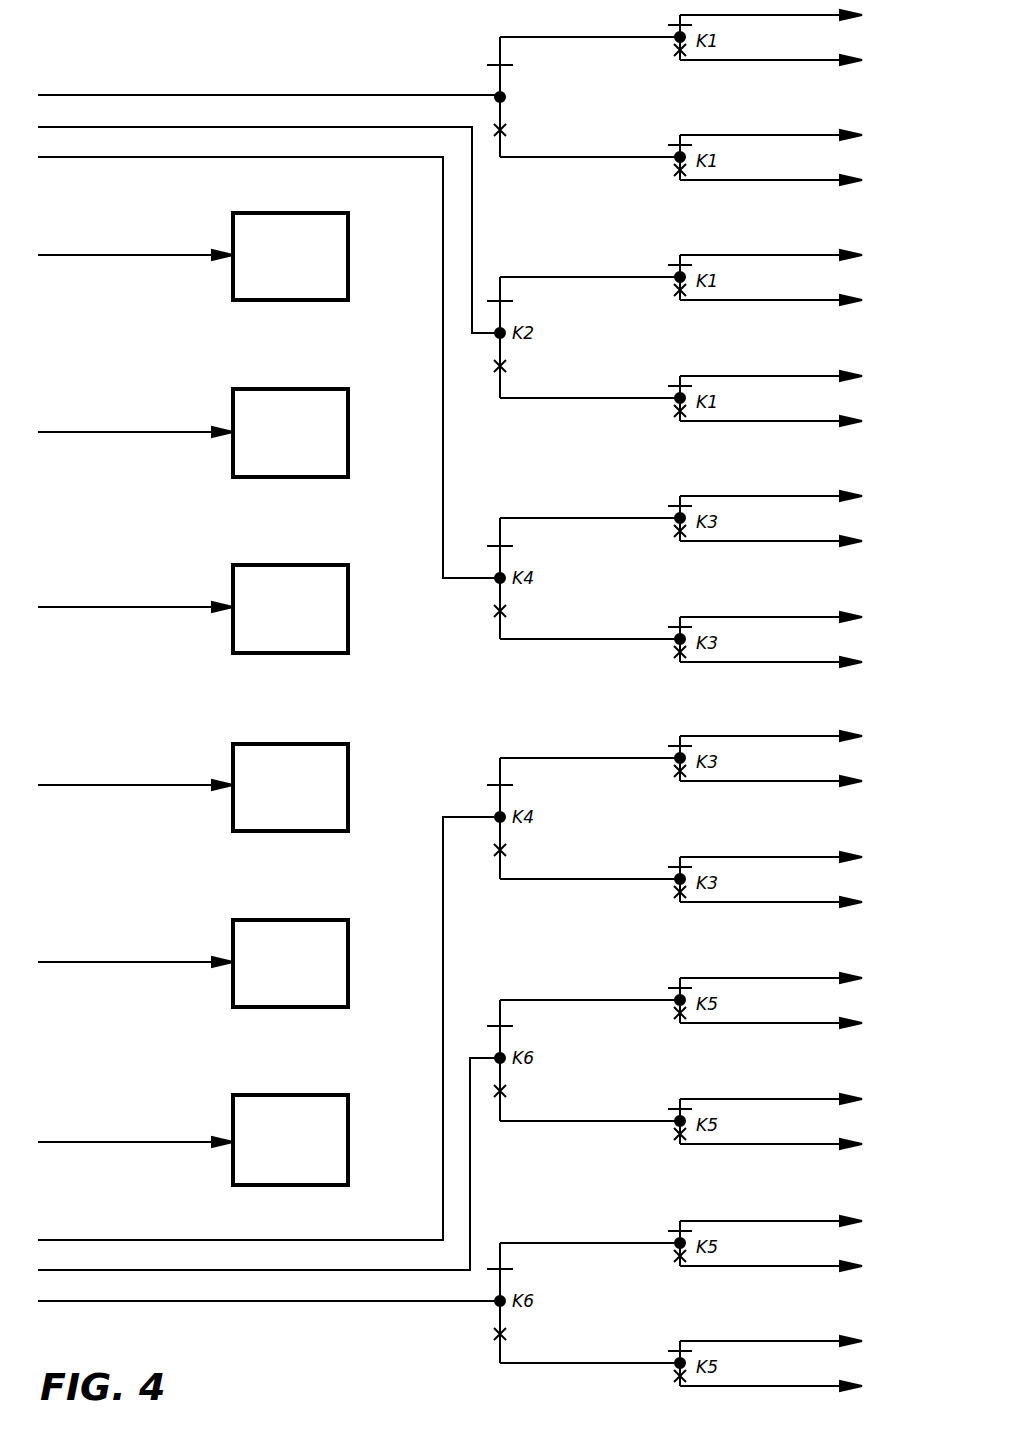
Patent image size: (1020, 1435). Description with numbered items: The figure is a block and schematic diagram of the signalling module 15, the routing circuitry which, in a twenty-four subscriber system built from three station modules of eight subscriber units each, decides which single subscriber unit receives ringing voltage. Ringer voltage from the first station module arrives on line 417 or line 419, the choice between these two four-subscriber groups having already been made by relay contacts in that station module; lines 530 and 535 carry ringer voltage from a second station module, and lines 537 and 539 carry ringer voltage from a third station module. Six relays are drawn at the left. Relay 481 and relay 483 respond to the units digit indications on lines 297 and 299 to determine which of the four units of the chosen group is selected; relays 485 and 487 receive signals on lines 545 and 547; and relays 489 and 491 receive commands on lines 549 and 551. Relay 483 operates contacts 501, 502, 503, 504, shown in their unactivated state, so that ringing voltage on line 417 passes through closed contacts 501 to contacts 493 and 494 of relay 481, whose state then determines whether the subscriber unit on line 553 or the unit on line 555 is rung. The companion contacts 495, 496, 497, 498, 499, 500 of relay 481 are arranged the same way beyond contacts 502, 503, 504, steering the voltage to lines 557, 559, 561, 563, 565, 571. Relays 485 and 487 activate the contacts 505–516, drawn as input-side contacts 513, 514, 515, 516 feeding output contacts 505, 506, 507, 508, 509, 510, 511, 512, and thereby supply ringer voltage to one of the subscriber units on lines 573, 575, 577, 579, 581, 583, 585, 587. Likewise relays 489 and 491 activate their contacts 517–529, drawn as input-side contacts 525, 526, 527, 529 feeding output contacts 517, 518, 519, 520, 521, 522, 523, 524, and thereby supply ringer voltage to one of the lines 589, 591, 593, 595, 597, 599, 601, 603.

The signalling module 15 is at (468, 38).
The line 417 is at (160, 96).
The line 419 is at (225, 128).
The line 530 is at (185, 160).
The line 535 is at (128, 1238).
The line 537 is at (232, 1270).
The line 539 is at (342, 1302).
The K1 relay 481 is at (340, 213).
The K2 relay 483 is at (340, 389).
The K3 relay 485 is at (340, 565).
The K4 relay 487 is at (340, 744).
The K5 relay 489 is at (340, 920).
The K6 relay 491 is at (340, 1095).
The line 297 is at (145, 257).
The line 299 is at (145, 434).
The line 545 is at (162, 610).
The line 547 is at (162, 786).
The line 549 is at (162, 962).
The line 551 is at (162, 1142).
The K2 relay contacts 501 is at (513, 65).
The K2 relay contacts 502 is at (507, 128).
The K2 relay contacts 503 is at (513, 301).
The K2 relay contacts 504 is at (507, 364).
The relay contacts 513 is at (513, 546).
The relay contacts 514 is at (507, 609).
The relay contacts 515 is at (513, 785).
The relay contacts 516 is at (507, 848).
The relay contacts 525 is at (513, 1026).
The relay contacts 526 is at (507, 1089).
The relay contacts 527 is at (513, 1269).
The relay contacts 529 is at (507, 1332).
The K1 contacts 493 is at (668, 25).
The K1 contacts 494 is at (676, 49).
The relay K1 contact 495 is at (668, 145).
The relay K1 contact 496 is at (676, 169).
The relay K1 contact 497 is at (668, 265).
The relay K1 contact 498 is at (676, 289).
The relay K1 contact 499 is at (668, 386).
The relay K1 contact 500 is at (676, 410).
The relay contacts 505 is at (668, 506).
The relay contacts 506 is at (676, 530).
The relay contacts 507 is at (668, 627).
The relay contacts 508 is at (676, 651).
The relay contacts 509 is at (668, 746).
The relay contacts 510 is at (676, 770).
The relay contacts 511 is at (668, 867).
The relay contacts 512 is at (676, 891).
The relay contacts 517 is at (668, 988).
The relay contacts 518 is at (676, 1012).
The relay contacts 519 is at (668, 1109).
The relay contacts 520 is at (676, 1133).
The relay contacts 521 is at (668, 1231).
The relay contacts 522 is at (676, 1255).
The relay contacts 523 is at (668, 1351).
The relay contacts 524 is at (676, 1375).
The line 553 is at (850, 20).
The line 555 is at (850, 65).
The output line 557 is at (850, 140).
The output line 559 is at (850, 185).
The output line 561 is at (850, 260).
The output line 563 is at (850, 305).
The output line 565 is at (850, 381).
The output line 571 is at (850, 426).
The line 573 is at (850, 501).
The line 575 is at (850, 546).
The line 577 is at (850, 622).
The line 579 is at (850, 667).
The line 581 is at (850, 741).
The line 583 is at (850, 786).
The line 585 is at (850, 862).
The line 587 is at (850, 907).
The line 589 is at (850, 983).
The line 591 is at (850, 1028).
The line 593 is at (850, 1104).
The line 595 is at (850, 1149).
The line 597 is at (850, 1226).
The line 599 is at (850, 1271).
The line 601 is at (850, 1346).
The line 603 is at (850, 1391).